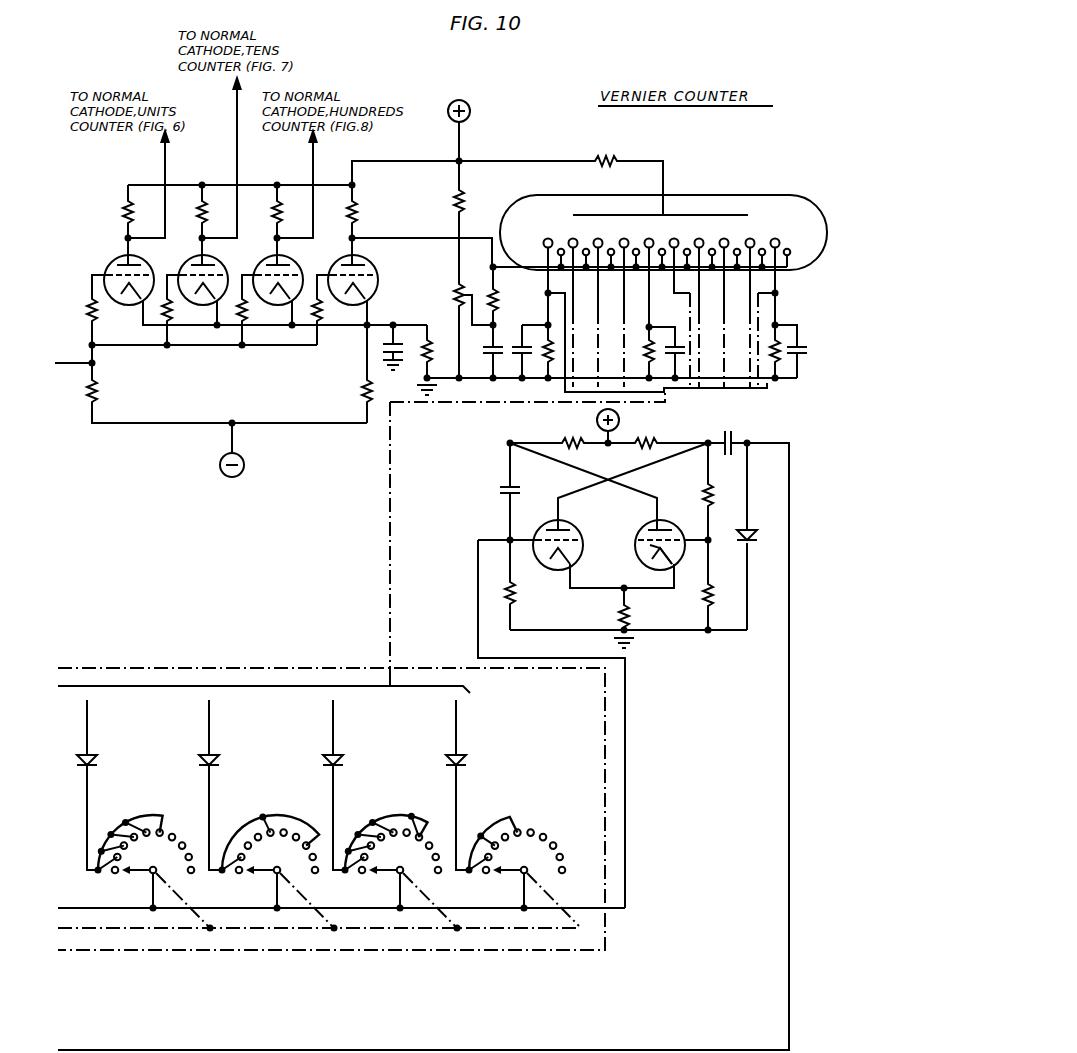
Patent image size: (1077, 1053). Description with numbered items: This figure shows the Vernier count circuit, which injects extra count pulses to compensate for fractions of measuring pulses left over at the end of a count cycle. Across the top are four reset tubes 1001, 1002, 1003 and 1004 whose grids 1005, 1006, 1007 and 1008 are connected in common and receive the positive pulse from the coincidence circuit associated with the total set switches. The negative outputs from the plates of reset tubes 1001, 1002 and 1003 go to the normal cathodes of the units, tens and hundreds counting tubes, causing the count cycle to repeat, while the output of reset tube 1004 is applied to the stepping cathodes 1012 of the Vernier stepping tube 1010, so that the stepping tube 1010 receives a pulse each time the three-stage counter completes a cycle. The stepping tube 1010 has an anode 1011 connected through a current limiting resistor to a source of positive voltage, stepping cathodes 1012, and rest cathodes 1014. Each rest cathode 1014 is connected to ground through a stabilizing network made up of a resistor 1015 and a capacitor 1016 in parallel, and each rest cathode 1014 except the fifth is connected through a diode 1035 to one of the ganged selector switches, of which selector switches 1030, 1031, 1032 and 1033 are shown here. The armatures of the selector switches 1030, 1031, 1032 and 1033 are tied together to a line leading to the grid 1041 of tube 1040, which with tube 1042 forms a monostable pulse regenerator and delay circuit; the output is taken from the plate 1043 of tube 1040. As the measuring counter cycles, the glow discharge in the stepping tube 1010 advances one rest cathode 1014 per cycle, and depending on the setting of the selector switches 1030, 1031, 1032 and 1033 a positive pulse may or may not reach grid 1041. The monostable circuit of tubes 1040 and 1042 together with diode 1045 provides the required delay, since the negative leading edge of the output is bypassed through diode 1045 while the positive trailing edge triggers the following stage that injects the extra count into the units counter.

The reset tube 1001 is at (114, 258).
The reset tube 1002 is at (207, 259).
The reset tube 1003 is at (281, 259).
The reset tube 1004 is at (372, 259).
The grid 1005 is at (108, 261).
The grid 1006 is at (186, 262).
The grid 1007 is at (260, 272).
The grid 1008 is at (334, 272).
The stepping tube 1010 is at (783, 196).
The anode 1011 is at (664, 213).
The stepping cathodes 1012 is at (750, 239).
The rest cathodes 1014 is at (673, 239).
The resistor 1015 is at (557, 362).
The capacitor 1016 is at (518, 340).
The selector switch 1030 is at (141, 898).
The selector switch 1031 is at (265, 898).
The selector switch 1032 is at (388, 898).
The selector switch 1033 is at (512, 898).
The diode 1035 is at (91, 757).
The tube 1040 is at (584, 533).
The grid 1041 is at (542, 536).
The tube 1042 is at (638, 562).
The plate 1043 is at (566, 524).
The diode 1045 is at (752, 540).